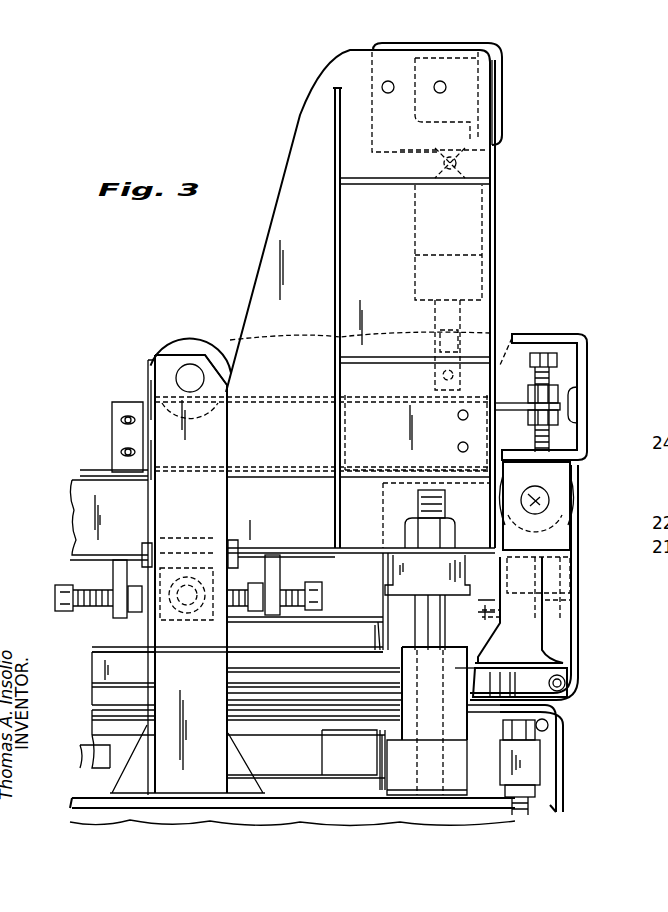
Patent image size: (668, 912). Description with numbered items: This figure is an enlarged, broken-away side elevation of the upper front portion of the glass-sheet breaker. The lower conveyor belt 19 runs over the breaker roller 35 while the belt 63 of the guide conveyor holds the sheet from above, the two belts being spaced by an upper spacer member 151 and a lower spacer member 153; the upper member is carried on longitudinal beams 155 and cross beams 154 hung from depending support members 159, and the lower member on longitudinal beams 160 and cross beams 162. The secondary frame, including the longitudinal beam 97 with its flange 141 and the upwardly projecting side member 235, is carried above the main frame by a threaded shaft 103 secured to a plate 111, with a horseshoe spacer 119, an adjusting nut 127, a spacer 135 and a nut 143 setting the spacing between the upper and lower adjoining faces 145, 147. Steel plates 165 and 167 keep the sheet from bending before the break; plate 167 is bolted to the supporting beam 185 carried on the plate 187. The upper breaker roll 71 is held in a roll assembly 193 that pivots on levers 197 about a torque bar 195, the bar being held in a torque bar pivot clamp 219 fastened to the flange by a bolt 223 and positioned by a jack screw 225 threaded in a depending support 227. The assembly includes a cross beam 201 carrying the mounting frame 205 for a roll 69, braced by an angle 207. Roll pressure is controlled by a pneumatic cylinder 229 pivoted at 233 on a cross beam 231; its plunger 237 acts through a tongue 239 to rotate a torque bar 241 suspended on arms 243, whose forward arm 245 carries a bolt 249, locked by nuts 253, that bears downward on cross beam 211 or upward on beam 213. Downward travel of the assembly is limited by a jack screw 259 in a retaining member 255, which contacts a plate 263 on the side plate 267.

The belt 19 is at (565, 787).
The breaker roller 35 is at (572, 732).
The belt 63 is at (88, 466).
The roll 69 is at (520, 512).
The upper breaker roll 71 is at (575, 675).
The beam 97 is at (78, 510).
The threaded shaft 103 is at (418, 503).
The plate 111 is at (385, 772).
The horseshoe spacer 119 is at (405, 672).
The adjusting nut 127 is at (415, 607).
The spacer 135 is at (393, 572).
The flange 141 is at (258, 548).
The nut 143 is at (405, 532).
The adjoining face 145 is at (92, 712).
The adjoining face 147 is at (92, 722).
The upper spacer member 151 is at (92, 690).
The lower spacer member 153 is at (95, 735).
The cross beam 154 is at (378, 632).
The longitudinal beam 155 is at (92, 665).
The support member 159 is at (472, 630).
The longitudinal beam 160 is at (100, 760).
The cross beam 162 is at (375, 745).
The plate 165 is at (380, 693).
The plate 167 is at (540, 742).
The supporting beam 185 is at (495, 778).
The plate 187 is at (478, 745).
The roll assembly 193 is at (633, 546).
The torque bar 195 is at (208, 640).
The lever 197 is at (262, 620).
The cross beam 201 is at (578, 606).
The mounting frame 205 is at (565, 490).
The angle 207 is at (585, 573).
The cross beam 211 is at (580, 440).
The beam 213 is at (578, 334).
The torque bar pivot clamp 219 is at (145, 552).
The bolt 223 is at (148, 542).
The jack screw 225 is at (98, 596).
The support 227 is at (112, 620).
The pneumatic cylinder 229 is at (497, 222).
The cross beam 231 is at (497, 99).
The pivot mounting 233 is at (480, 162).
The side member 235 is at (472, 272).
The plunger 237 is at (436, 320).
The tongue 239 is at (535, 378).
The torque bar 241 is at (180, 345).
The arm 243 is at (165, 390).
The arm 245 is at (214, 352).
The bolt 249 is at (548, 378).
The nut 253 is at (558, 418).
The jack screw retaining member 255 is at (530, 767).
The jack screw 259 is at (560, 700).
The plate 263 is at (560, 663).
The side plate 267 is at (562, 575).